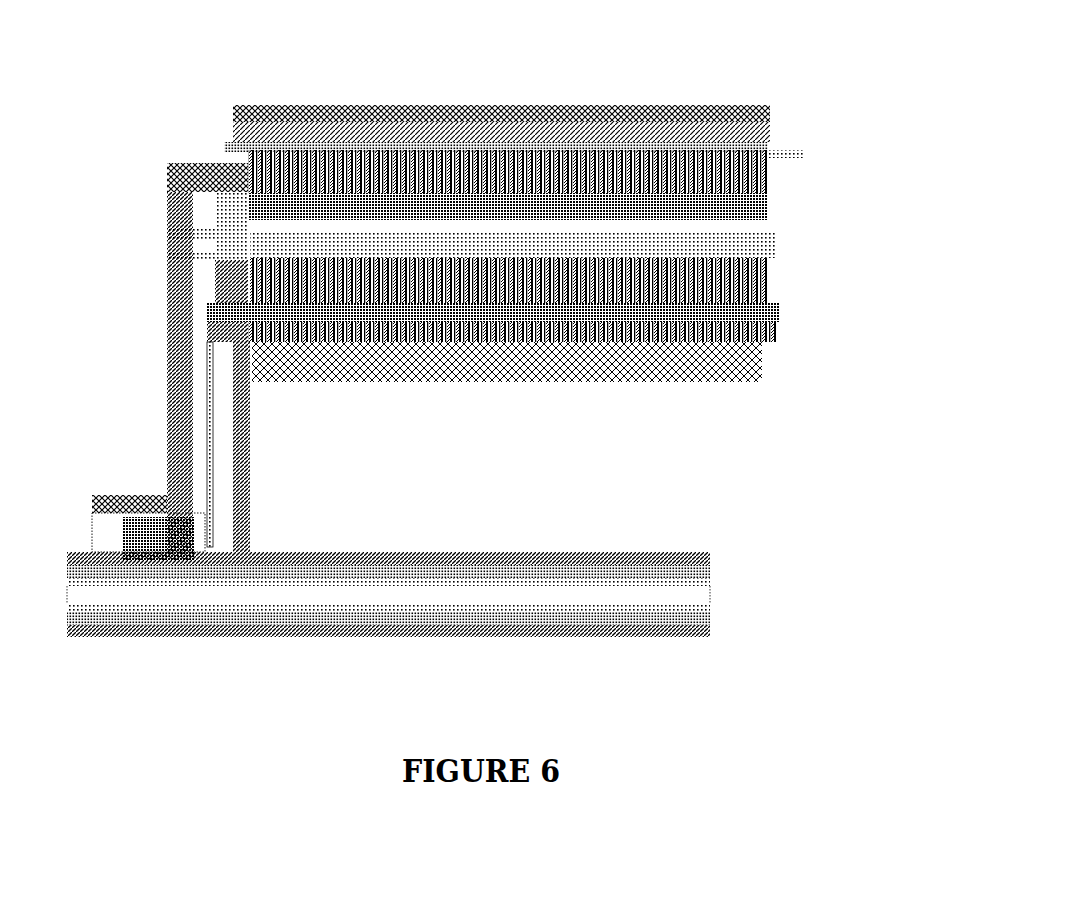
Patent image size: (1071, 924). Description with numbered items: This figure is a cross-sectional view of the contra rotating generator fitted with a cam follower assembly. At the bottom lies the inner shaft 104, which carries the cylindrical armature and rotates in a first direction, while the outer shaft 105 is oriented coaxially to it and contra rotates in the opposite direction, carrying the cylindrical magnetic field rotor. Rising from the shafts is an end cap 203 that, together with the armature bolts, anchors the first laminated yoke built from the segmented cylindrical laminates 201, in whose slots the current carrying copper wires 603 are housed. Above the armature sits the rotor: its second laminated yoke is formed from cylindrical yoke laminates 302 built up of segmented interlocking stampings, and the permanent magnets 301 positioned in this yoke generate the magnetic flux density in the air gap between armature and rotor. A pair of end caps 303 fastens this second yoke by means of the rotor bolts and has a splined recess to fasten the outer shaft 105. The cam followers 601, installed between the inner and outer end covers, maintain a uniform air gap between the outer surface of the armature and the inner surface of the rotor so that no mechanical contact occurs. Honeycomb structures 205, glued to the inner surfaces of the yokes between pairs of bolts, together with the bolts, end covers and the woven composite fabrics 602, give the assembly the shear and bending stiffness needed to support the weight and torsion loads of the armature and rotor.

The inner shaft 104 is at (533, 552).
The outer shaft 105 is at (115, 493).
The segmented cylindrical laminates 201 is at (722, 295).
The end cap 203 is at (242, 465).
The honeycomb structures 205 is at (701, 125).
The permanent magnets 301 is at (763, 213).
The cylindrical yoke laminates 302 is at (736, 178).
The end caps 303 is at (193, 166).
The cam followers 601 is at (225, 200).
The woven composite fabrics 602 is at (641, 103).
The current carrying copper wires 603 is at (756, 247).